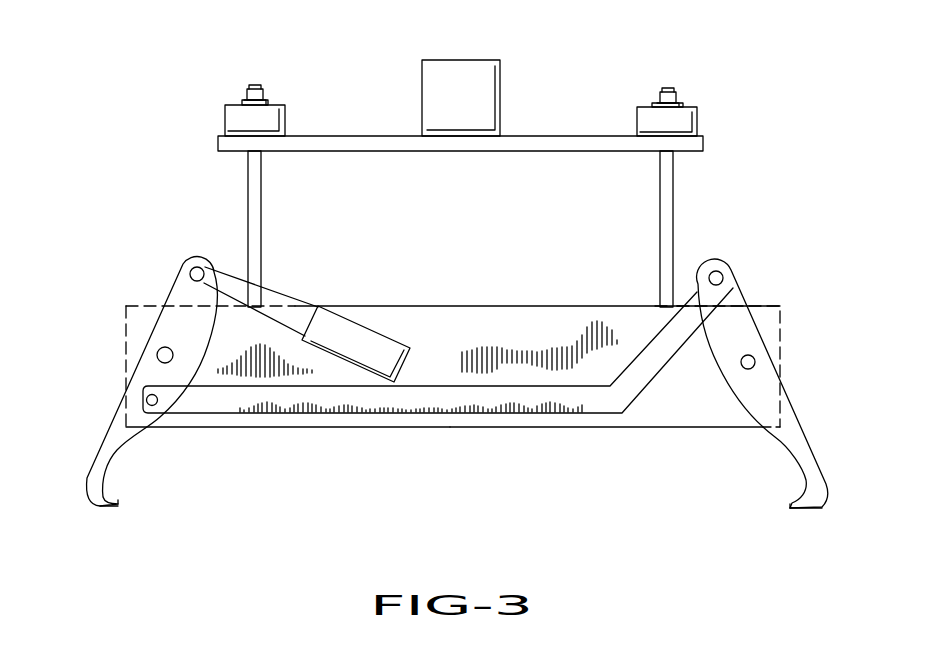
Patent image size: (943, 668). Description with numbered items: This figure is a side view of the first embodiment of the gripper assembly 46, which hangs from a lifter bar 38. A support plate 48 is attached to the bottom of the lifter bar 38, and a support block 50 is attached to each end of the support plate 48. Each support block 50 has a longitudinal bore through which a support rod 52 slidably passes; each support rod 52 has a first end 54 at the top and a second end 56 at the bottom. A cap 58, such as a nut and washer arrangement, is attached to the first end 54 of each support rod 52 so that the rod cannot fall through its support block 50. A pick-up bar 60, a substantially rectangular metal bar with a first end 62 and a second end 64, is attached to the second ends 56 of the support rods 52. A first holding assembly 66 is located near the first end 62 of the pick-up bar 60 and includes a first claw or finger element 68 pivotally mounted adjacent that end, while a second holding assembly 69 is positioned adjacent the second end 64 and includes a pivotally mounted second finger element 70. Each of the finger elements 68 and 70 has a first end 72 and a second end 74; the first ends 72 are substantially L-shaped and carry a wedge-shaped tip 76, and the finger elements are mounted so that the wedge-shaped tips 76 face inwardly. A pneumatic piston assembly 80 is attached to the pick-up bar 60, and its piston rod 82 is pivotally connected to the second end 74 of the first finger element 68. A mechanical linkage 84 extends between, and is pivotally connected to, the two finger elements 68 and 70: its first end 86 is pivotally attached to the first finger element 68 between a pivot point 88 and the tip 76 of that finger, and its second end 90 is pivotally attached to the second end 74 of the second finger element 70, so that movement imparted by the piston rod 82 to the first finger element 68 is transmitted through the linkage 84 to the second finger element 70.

The lifter bar 38 is at (456, 75).
The gripper assembly 46 is at (88, 200).
The support plate 48 is at (333, 136).
The support block 50 is at (245, 116).
The support rod 52 is at (252, 188).
The first end 54 is at (254, 88).
The second end 56 is at (663, 302).
The cap 58 is at (244, 99).
The pick-up bar 60 is at (686, 401).
The first end 62 is at (126, 314).
The second end 64 is at (781, 328).
The first holding assembly 66 is at (106, 520).
The first finger element 68 is at (148, 376).
The second holding assembly 69 is at (804, 520).
The second finger element 70 is at (790, 412).
The first end 72 is at (73, 490).
The second end 74 is at (190, 262).
The wedge-shaped tip 76 is at (120, 501).
The pneumatic piston assembly 80 is at (292, 262).
The piston rod 82 is at (273, 298).
The mechanical linkage 84 is at (463, 393).
The first end 86 is at (168, 403).
The pivot point 88 is at (157, 352).
The second end 90 is at (707, 291).